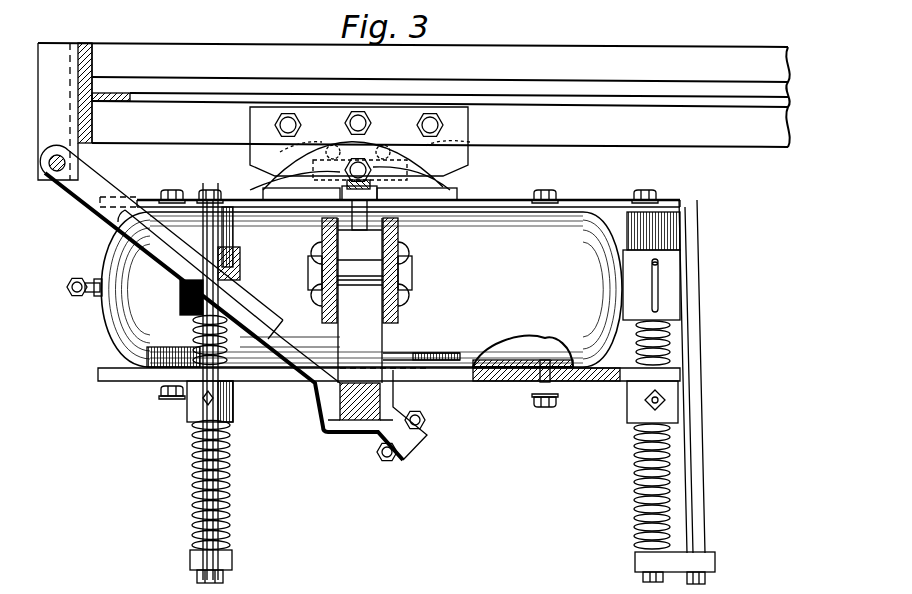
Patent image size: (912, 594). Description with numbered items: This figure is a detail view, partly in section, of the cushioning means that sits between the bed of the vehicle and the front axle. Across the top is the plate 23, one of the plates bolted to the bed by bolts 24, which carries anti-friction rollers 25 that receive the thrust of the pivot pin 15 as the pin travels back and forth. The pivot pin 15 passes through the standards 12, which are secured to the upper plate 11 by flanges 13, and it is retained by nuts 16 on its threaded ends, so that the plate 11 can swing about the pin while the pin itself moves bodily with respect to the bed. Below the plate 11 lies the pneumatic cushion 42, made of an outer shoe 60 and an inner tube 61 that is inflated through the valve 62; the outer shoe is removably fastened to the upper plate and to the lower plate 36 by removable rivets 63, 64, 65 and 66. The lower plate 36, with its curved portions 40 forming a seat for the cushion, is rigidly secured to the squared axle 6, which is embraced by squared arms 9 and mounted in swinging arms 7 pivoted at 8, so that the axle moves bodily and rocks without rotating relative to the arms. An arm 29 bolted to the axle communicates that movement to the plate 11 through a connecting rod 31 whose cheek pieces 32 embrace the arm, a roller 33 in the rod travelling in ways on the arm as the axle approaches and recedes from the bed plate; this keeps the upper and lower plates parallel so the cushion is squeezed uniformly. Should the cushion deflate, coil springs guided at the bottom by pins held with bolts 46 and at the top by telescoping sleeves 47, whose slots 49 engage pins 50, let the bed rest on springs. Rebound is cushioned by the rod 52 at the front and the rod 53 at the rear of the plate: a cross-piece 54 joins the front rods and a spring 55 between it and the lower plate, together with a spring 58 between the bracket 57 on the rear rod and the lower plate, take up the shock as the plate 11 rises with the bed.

The axle 6 is at (340, 412).
The swinging arms 7 is at (254, 308).
The pivot 8 is at (52, 180).
The squared arms 9 is at (348, 434).
The plate 11 is at (516, 206).
The standards 12 is at (456, 183).
The flanges 13 is at (458, 194).
The pivot pin 15 is at (322, 168).
The nuts 16 is at (366, 160).
The plate 23 is at (470, 45).
The bolts 24 is at (432, 113).
The rollers 25 is at (415, 148).
The arm 29 is at (372, 352).
The connecting rod 31 is at (330, 222).
The cheek pieces 32 is at (370, 292).
The roller 33 is at (412, 272).
The plate 36 is at (112, 380).
The curved portions 40 is at (270, 369).
The cushion 42 is at (142, 340).
The bolts 46 is at (680, 400).
The telescoping sleeves 47 is at (682, 316).
The slots 49 is at (660, 298).
The pins 50 is at (682, 252).
The rod 52 is at (208, 440).
The rod 53 is at (700, 478).
The cross-piece 54 is at (234, 562).
The spring 55 is at (193, 523).
The bracket 57 is at (645, 562).
The spring 58 is at (636, 497).
The outer shoe 60 is at (583, 362).
The inner tube 61 is at (524, 372).
The valve 62 is at (96, 292).
The removable rivet 63 is at (560, 388).
The removable rivet 64 is at (552, 188).
The removable rivet 65 is at (178, 186).
The removable rivet 66 is at (172, 400).